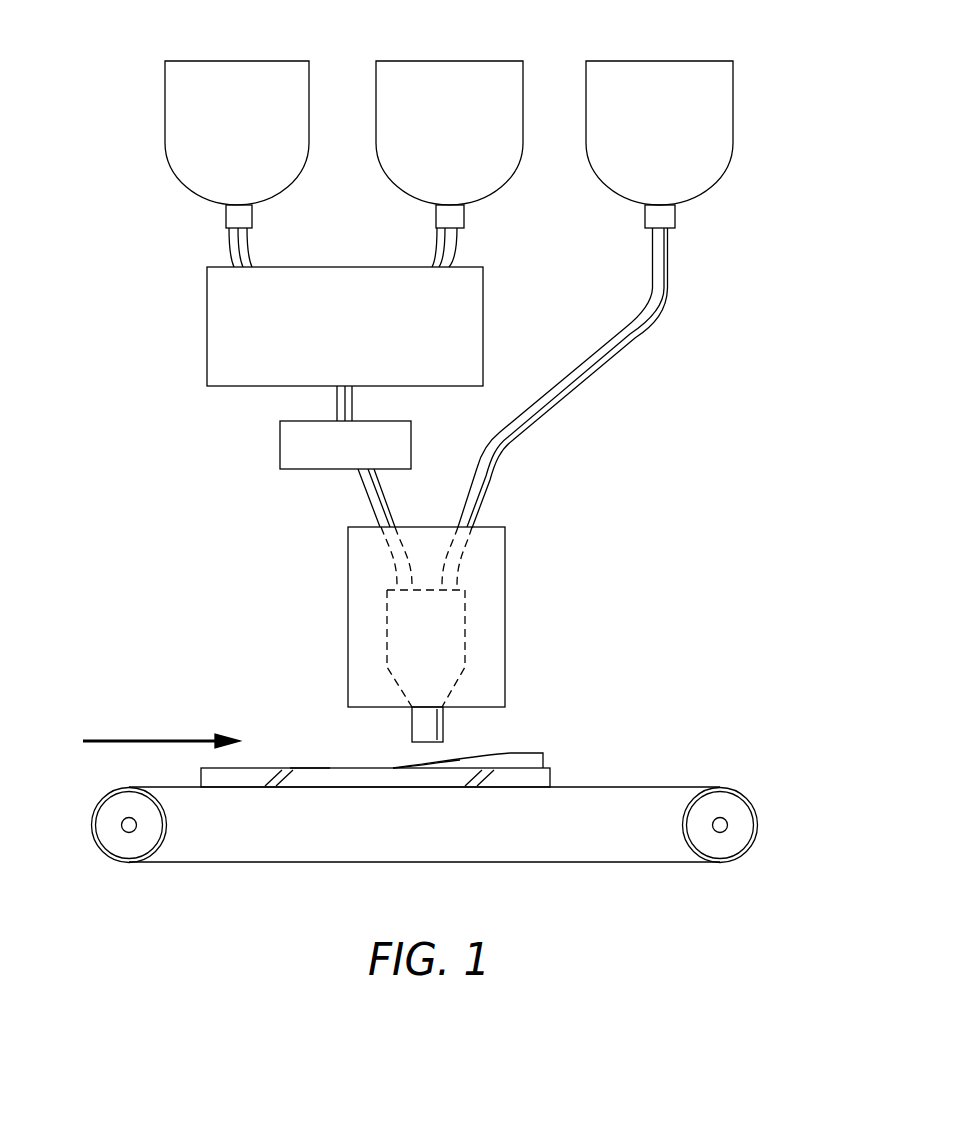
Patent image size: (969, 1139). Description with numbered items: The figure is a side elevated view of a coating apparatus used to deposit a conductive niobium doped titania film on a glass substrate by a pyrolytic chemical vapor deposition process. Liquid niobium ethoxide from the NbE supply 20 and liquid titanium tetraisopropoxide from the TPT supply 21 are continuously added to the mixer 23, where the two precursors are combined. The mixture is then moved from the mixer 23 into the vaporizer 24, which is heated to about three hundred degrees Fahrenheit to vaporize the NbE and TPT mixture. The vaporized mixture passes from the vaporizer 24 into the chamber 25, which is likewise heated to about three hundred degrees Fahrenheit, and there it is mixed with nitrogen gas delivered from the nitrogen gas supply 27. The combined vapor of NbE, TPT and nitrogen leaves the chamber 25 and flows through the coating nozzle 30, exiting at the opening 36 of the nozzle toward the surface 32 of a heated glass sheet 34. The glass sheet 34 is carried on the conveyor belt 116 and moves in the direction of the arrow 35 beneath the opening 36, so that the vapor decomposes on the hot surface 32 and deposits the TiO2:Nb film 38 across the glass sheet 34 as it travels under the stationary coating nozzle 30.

The NbE supply 20 is at (279, 55).
The TPT supply 21 is at (505, 45).
The nitrogen gas supply 27 is at (747, 44).
The mixer 23 is at (198, 331).
The vaporizer 24 is at (280, 441).
The chamber 25 is at (505, 617).
The coating nozzle 30 is at (444, 727).
The surface 32 is at (264, 768).
The glass sheet 34 is at (309, 760).
The arrow 35 is at (150, 740).
The opening 36 is at (415, 757).
The TiO2:Nb film 38 is at (535, 753).
The conveyor belt 116 is at (673, 786).